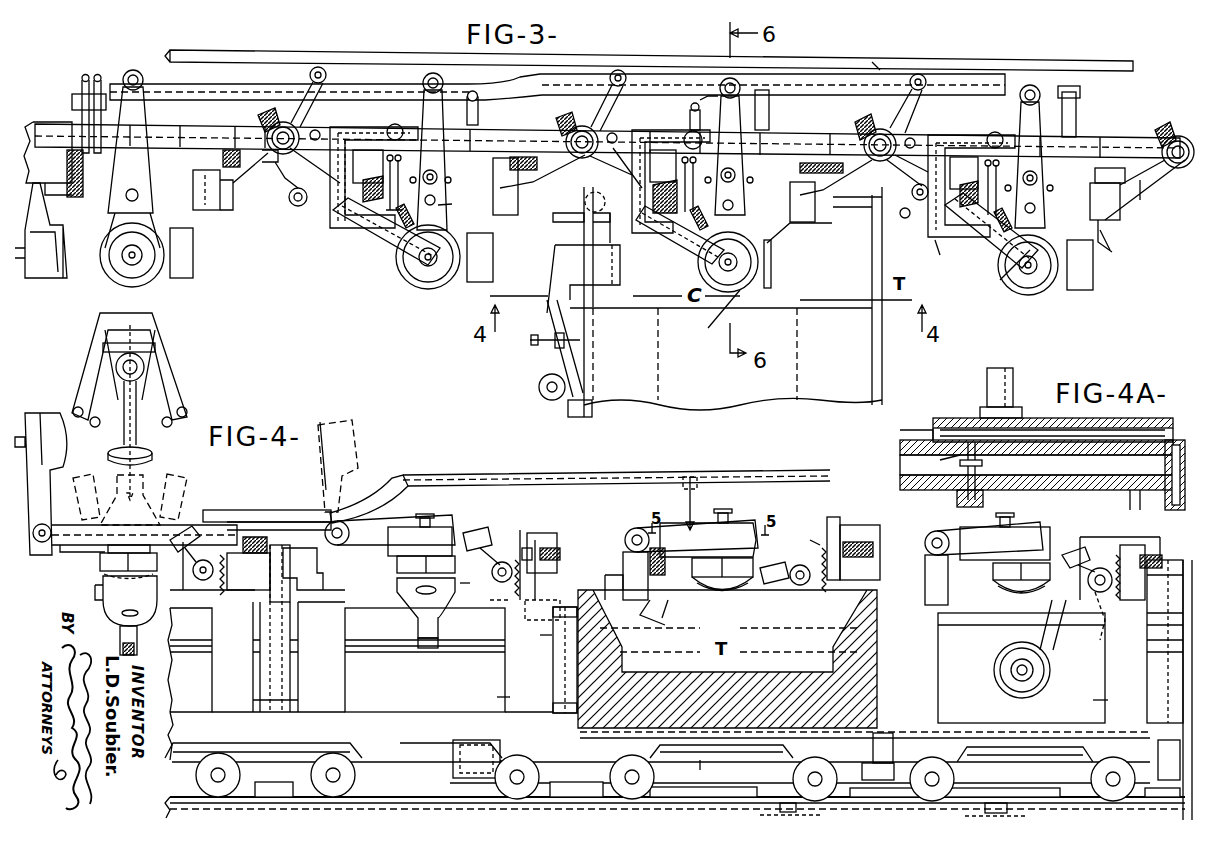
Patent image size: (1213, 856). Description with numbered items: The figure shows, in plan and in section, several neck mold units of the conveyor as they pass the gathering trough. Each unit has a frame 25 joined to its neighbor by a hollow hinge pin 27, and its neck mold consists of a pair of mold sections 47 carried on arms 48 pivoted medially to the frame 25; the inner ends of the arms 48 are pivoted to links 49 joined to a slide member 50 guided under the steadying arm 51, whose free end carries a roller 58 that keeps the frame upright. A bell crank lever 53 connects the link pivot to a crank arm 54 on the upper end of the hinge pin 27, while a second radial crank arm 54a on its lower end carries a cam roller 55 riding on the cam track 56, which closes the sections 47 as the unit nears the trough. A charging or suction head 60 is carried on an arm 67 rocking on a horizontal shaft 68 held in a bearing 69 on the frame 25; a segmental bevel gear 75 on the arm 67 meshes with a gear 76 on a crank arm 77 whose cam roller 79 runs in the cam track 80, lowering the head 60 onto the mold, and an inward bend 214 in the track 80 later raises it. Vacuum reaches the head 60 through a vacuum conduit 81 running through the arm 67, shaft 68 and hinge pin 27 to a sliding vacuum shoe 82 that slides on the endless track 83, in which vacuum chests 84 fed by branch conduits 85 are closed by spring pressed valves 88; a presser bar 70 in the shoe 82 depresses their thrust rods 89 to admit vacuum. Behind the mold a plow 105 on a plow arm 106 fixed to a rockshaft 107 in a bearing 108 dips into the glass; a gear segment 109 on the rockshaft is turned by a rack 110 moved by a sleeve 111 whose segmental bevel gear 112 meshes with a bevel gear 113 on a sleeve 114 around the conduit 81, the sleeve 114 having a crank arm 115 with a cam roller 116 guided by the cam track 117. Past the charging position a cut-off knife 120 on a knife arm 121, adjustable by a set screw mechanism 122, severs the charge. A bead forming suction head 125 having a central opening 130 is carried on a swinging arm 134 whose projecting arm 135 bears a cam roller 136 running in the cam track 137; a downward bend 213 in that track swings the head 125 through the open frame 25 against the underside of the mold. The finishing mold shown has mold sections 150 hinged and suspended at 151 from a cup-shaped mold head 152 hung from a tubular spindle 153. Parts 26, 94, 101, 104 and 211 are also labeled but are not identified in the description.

In FIG. 3, the frame 25 is at (1145, 189).
In FIG. 4, the frame 25 is at (790, 698).
In FIG. 4, the supporting wheel 26 is at (495, 776).
In FIG. 4A, the hinge pin 27 is at (985, 392).
In FIG. 4, the hinge pin 27 is at (553, 661).
In FIG. 3, the mold sections 47 is at (132, 287).
In FIG. 4, the mold sections 47 is at (572, 600).
In FIG. 3, the arms 48 is at (440, 228).
In FIG. 3, the links 49 is at (448, 172).
In FIG. 3, the slide member 50 is at (440, 192).
In FIG. 3, the steadying arm 51 is at (455, 205).
In FIG. 3, the bell crank lever 53 is at (358, 135).
In FIG. 4, the bell crank lever 53 is at (615, 560).
In FIG. 3, the crank arm 54 is at (318, 130).
In FIG. 4, the crank arm 54 is at (608, 566).
In FIG. 3, the second radial crank arm 54a is at (912, 110).
In FIG. 4, the second radial crank arm 54a is at (605, 755).
In FIG. 3, the cam roller 55 is at (918, 74).
In FIG. 4, the cam roller 55 is at (657, 770).
In FIG. 3, the cam track 56 is at (867, 57).
In FIG. 4, the cam track 56 is at (706, 769).
In FIG. 3, the roller 58 is at (1030, 85).
In FIG. 3, the charging or suction head 60 is at (711, 317).
In FIG. 4, the charging or suction head 60 is at (750, 520).
In FIG. 4, the arm 67 is at (955, 526).
In FIG. 3, the horizontal shaft 68 is at (942, 255).
In FIG. 4, the horizontal shaft 68 is at (637, 528).
In FIG. 3, the bearing 69 is at (333, 162).
In FIG. 4A, the presser bar 70 is at (1070, 430).
In FIG. 4, the segmental bevel gear 75 is at (652, 615).
In FIG. 4, the gear 76 is at (677, 615).
In FIG. 4, the crank arm 77 is at (688, 502).
In FIG. 3, the cam roller 79 is at (688, 118).
In FIG. 4, the cam roller 79 is at (693, 502).
In FIG. 4, the cam track 80 is at (498, 470).
In FIG. 3, the vacuum conduit 81 is at (680, 248).
In FIG. 4A, the vacuum conduit 81 is at (990, 378).
In FIG. 4, the vacuum conduit 81 is at (560, 540).
In FIG. 4A, the sliding vacuum shoe 82 is at (1140, 438).
In FIG. 4, the sliding vacuum shoe 82 is at (735, 790).
In FIG. 4A, the endless track 83 is at (1040, 480).
In FIG. 4A, the vacuum chests 84 is at (1036, 465).
In FIG. 4, the vacuum chests 84 is at (1010, 822).
In FIG. 4A, the branch conduits 85 is at (1128, 500).
In FIG. 4A, the spring pressed valve 88 is at (985, 466).
In FIG. 4, the spring pressed valve 88 is at (985, 822).
In FIG. 4A, the thrust rod 89 is at (940, 464).
In FIG. 4, the thrust rod 89 is at (785, 800).
In FIG. 3, the housing 94 is at (680, 128).
In FIG. 3, the pin 101 is at (703, 101).
In FIG. 4, the bracket 104 is at (730, 480).
In FIG. 3, the plow 105 is at (772, 287).
In FIG. 4, the plow 105 is at (485, 518).
In FIG. 3, the plow arm 106 is at (1098, 250).
In FIG. 4, the plow arm 106 is at (530, 518).
In FIG. 3, the rockshaft 107 is at (1120, 218).
In FIG. 4, the rockshaft 107 is at (803, 543).
In FIG. 3, the bearing 108 is at (1112, 240).
In FIG. 4, the bearing 108 is at (778, 607).
In FIG. 4, the gear segment 109 is at (799, 619).
In FIG. 4, the rack 110 is at (545, 528).
In FIG. 4, the sleeve 111 is at (255, 508).
In FIG. 3, the segmental bevel gear 112 is at (1145, 190).
In FIG. 4, the segmental bevel gear 112 is at (552, 528).
In FIG. 4, the bevel gear 113 is at (541, 564).
In FIG. 4, the sleeve 114 is at (532, 640).
In FIG. 3, the crank arm 115 is at (583, 203).
In FIG. 4, the crank arm 115 is at (519, 749).
In FIG. 3, the cam roller 116 is at (613, 228).
In FIG. 3, the cam track 117 is at (728, 236).
In FIG. 3, the cut-off knife 120 is at (615, 276).
In FIG. 4, the cut-off knife 120 is at (625, 605).
In FIG. 3, the knife arm 121 is at (548, 332).
In FIG. 4, the knife arm 121 is at (536, 606).
In FIG. 3, the set screw mechanism 122 is at (530, 352).
In FIG. 4, the bead forming suction head 125 is at (470, 630).
In FIG. 4, the central opening 130 is at (1010, 670).
In FIG. 4, the swinging arm 134 is at (1050, 645).
In FIG. 3, the projecting arm 135 is at (770, 118).
In FIG. 3, the cam roller 136 is at (790, 110).
In FIG. 3, the cam track 137 is at (260, 90).
In FIG. 4, the cam track 137 is at (362, 665).
In FIG. 4, the mold sections 150 is at (150, 440).
In FIG. 4, the hinge suspension 151 is at (145, 367).
In FIG. 4, the mold head 152 is at (150, 385).
In FIG. 4, the tubular spindle 153 is at (160, 325).
In FIG. 3, the arm 211 is at (898, 255).
In FIG. 3, the downward bend 213 is at (520, 92).
In FIG. 4, the inward bend 214 is at (340, 490).